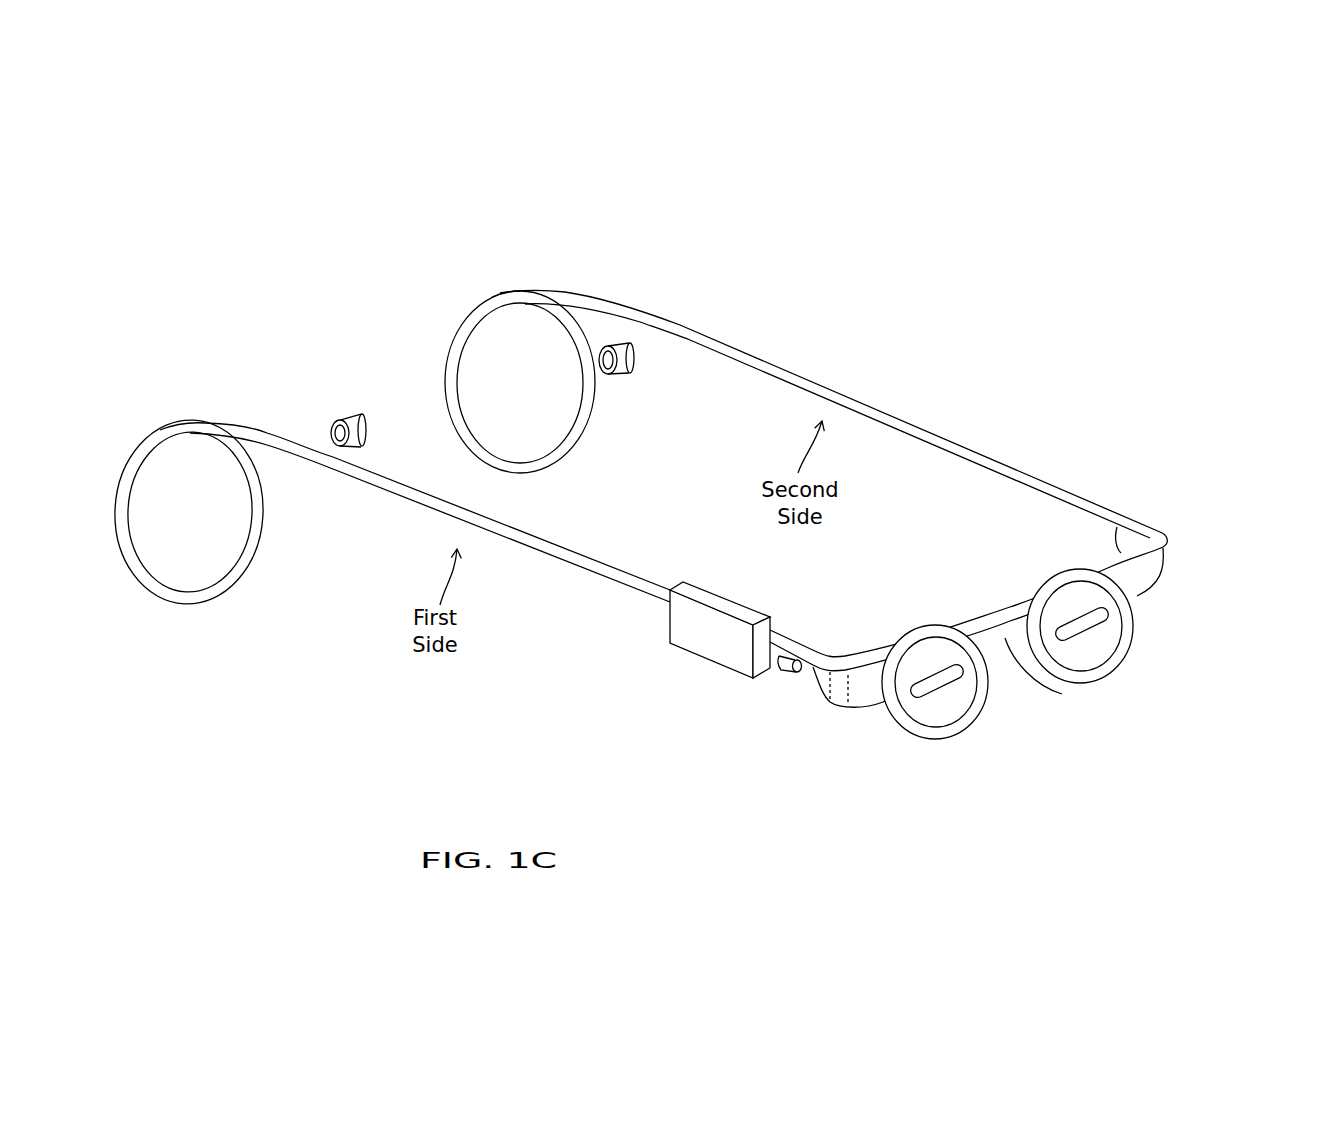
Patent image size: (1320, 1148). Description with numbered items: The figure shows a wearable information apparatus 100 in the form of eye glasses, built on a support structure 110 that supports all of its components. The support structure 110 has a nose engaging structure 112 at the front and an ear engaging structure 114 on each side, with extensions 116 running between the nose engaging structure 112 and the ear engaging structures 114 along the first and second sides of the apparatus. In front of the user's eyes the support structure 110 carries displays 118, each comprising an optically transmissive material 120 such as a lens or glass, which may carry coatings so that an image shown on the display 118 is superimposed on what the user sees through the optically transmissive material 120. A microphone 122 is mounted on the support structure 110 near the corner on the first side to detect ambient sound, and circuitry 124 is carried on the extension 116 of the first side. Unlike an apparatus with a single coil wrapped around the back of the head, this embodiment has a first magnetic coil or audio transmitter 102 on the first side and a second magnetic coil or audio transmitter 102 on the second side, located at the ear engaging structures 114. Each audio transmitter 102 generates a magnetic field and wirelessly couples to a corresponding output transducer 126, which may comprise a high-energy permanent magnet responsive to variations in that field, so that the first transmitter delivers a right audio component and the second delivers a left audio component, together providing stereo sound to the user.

The wearable information apparatus 100 is at (874, 378).
The magnetic coil or audio transmitter 102 is at (473, 281).
The support structure 110 is at (1063, 446).
The nose engaging structure 112 is at (1062, 694).
The ear engaging structure 114 is at (542, 290).
The extension 116 is at (947, 454).
The display 118 is at (937, 693).
The optically transmissive material 120 is at (873, 757).
The microphone 122 is at (782, 674).
The circuitry 124 is at (700, 583).
The output transducer 126 is at (700, 381).